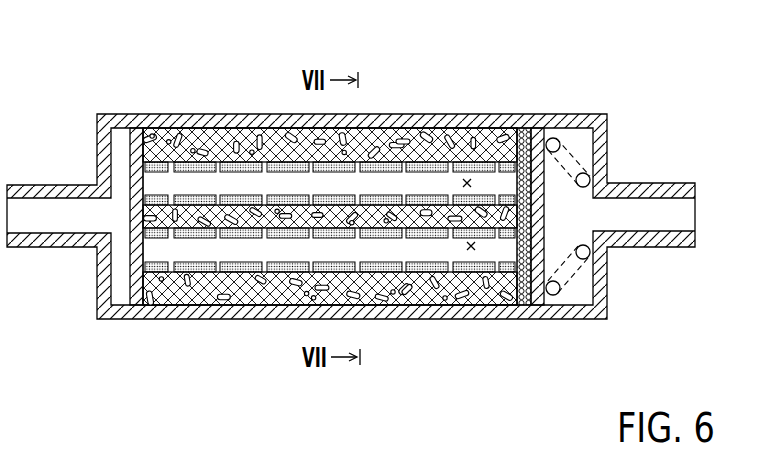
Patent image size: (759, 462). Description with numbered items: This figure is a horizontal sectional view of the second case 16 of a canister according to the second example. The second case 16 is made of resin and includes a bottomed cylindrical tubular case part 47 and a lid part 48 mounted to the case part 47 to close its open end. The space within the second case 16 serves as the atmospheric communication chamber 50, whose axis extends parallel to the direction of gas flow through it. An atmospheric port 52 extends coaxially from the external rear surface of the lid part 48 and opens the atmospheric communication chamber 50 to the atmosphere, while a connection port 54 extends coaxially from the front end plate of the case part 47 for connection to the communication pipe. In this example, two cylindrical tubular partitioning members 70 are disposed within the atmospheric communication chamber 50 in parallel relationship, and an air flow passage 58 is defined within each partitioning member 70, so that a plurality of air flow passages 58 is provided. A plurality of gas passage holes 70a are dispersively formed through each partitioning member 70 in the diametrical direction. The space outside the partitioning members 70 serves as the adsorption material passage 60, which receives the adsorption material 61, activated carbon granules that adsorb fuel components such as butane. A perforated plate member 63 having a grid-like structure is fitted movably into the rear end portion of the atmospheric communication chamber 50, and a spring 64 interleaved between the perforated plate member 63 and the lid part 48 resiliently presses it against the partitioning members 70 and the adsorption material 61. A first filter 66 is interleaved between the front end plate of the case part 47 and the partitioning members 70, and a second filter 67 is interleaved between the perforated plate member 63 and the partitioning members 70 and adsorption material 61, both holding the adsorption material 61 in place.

The second case 16 is at (118, 78).
The case part 47 is at (167, 113).
The lid part 48 is at (608, 128).
The atmospheric communication chamber 50 is at (258, 130).
The atmospheric port 52 is at (661, 242).
The connection port 54 is at (42, 185).
The air flow passage 58 is at (467, 178).
The adsorption material passage 60 is at (343, 218).
The adsorption material 61 is at (176, 300).
The perforated plate member 63 is at (537, 136).
The spring 64 is at (556, 137).
The first filter 66 is at (138, 297).
The second filter 67 is at (521, 294).
The partitioning members 70 is at (222, 138).
The gas passage holes 70a is at (405, 128).